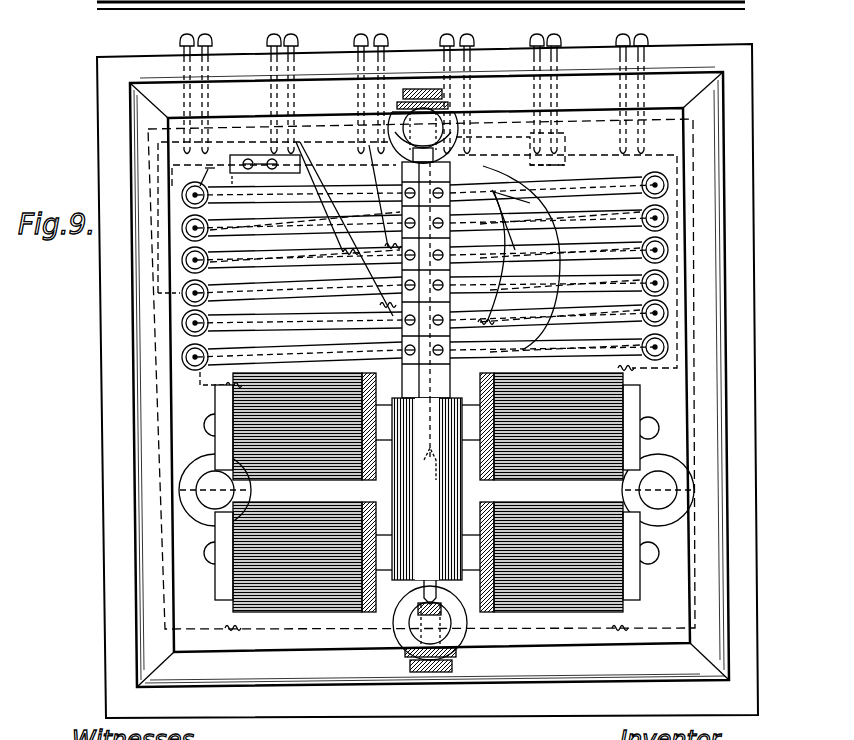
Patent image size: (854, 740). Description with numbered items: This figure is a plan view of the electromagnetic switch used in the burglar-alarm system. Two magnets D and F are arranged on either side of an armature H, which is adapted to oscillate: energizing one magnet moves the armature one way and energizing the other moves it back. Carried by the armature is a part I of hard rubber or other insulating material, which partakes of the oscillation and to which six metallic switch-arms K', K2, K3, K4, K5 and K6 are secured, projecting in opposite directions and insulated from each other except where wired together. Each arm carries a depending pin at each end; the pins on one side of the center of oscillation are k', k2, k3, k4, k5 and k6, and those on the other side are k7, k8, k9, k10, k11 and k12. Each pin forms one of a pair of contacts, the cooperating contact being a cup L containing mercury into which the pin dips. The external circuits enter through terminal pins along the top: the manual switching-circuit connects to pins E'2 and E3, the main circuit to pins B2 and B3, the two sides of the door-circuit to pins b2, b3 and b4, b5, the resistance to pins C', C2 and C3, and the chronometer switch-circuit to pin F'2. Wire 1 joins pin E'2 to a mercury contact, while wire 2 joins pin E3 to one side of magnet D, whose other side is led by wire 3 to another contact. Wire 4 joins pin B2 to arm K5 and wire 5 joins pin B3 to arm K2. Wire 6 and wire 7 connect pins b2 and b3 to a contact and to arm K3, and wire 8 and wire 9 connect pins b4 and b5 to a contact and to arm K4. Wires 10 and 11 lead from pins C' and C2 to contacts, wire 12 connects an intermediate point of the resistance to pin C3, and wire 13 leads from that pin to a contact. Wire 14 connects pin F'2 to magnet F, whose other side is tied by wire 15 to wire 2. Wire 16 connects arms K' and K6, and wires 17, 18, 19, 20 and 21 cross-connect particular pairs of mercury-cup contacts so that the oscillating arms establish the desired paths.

The wire 14 is at (666, 120).
The wire 13 is at (148, 160).
The wire 11 is at (608, 158).
The pin E3 is at (180, 40).
The pin E'2 is at (219, 92).
The pin B2 is at (275, 32).
The pin B3 is at (294, 33).
The pin b2 is at (356, 40).
The pin b3 is at (387, 40).
The pin b4 is at (448, 32).
The pin b5 is at (469, 32).
The pin C' is at (520, 89).
The pin C2 is at (562, 42).
The pin C3 is at (623, 32).
The pin F'2 is at (657, 83).
The wire 8 is at (440, 140).
The wire 12 is at (300, 156).
The insulating part I is at (440, 173).
The contact-pin k7 is at (182, 194).
The contact-pin k8 is at (182, 228).
The contact-pin k9 is at (182, 260).
The contact-pin k10 is at (182, 293).
The contact-pin k11 is at (182, 323).
The contact-pin k12 is at (182, 357).
The contact-pin k' is at (583, 185).
The contact-pin k2 is at (670, 219).
The contact-pin k3 is at (670, 251).
The contact-pin k4 is at (670, 284).
The contact-pin k5 is at (670, 314).
The contact-pin k6 is at (670, 348).
The wire 5 is at (332, 184).
The wire 7 is at (365, 184).
The wire 4 is at (360, 274).
The wire 6 is at (346, 143).
The wire 16 is at (505, 272).
The wire 9 is at (482, 168).
The switch-arm K' is at (512, 186).
The wire 10 is at (555, 168).
The switch-arm K2 is at (560, 212).
The wire 19 is at (572, 247).
The switch-arm K3 is at (565, 275).
The switch-arm K4 is at (614, 286).
The wire 20 is at (562, 300).
The switch-arm K5 is at (620, 318).
The switch-arm K6 is at (565, 338).
The wire 21 is at (613, 348).
The wire 17 is at (300, 214).
The wire 18 is at (336, 249).
The wire 1 is at (236, 183).
The cup L is at (182, 297).
The wire 3 is at (205, 390).
The wire 2 is at (165, 443).
The magnet D is at (318, 492).
The magnet F is at (551, 492).
The armature H is at (427, 489).
The wire 15 is at (510, 624).